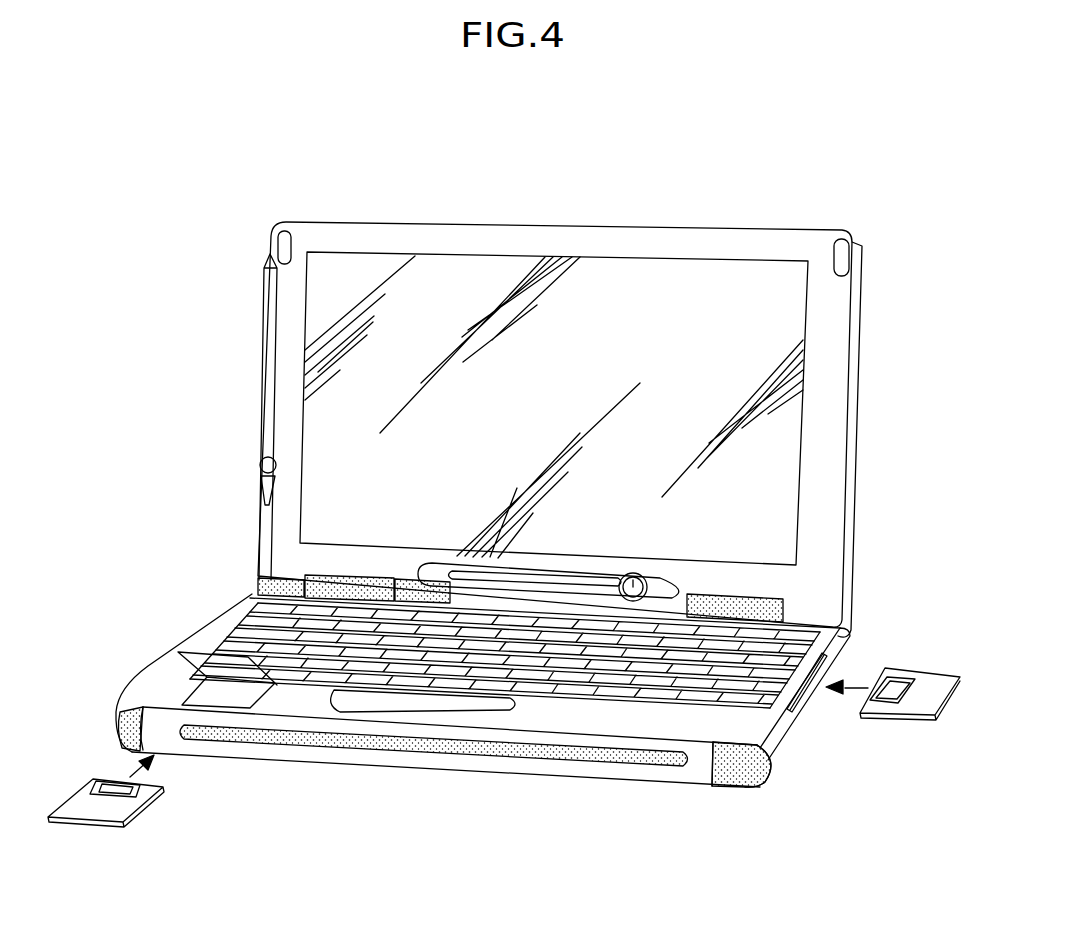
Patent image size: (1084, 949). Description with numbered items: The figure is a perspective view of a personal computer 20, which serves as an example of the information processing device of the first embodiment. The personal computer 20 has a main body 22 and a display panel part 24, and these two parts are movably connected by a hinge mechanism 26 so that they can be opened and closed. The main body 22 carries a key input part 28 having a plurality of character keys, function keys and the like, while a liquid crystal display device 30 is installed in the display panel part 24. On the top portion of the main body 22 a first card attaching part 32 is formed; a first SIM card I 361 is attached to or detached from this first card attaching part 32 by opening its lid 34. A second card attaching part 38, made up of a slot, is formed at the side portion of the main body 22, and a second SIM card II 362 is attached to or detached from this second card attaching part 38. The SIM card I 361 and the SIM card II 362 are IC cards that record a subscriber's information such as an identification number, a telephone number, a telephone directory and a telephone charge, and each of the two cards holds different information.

The personal computer 20 is at (420, 772).
The main body 22 is at (590, 773).
The display panel part 24 is at (858, 414).
The hinge mechanism 26 is at (827, 613).
The key input part 28 is at (217, 614).
The liquid crystal display device 30 is at (318, 413).
The first card attaching part 32 is at (238, 712).
The lid 34 is at (195, 672).
The first SIM card I 361 is at (77, 823).
The second SIM card II 362 is at (890, 715).
The second card attaching part 38 is at (806, 707).